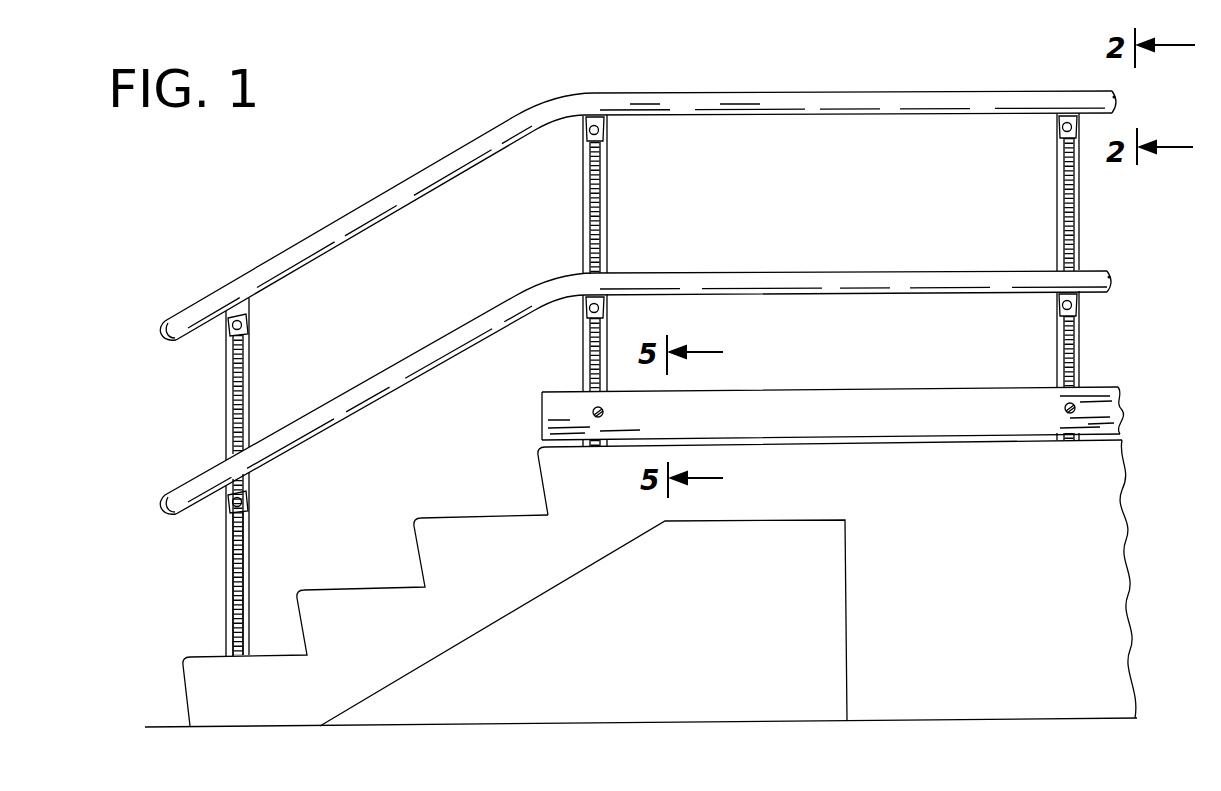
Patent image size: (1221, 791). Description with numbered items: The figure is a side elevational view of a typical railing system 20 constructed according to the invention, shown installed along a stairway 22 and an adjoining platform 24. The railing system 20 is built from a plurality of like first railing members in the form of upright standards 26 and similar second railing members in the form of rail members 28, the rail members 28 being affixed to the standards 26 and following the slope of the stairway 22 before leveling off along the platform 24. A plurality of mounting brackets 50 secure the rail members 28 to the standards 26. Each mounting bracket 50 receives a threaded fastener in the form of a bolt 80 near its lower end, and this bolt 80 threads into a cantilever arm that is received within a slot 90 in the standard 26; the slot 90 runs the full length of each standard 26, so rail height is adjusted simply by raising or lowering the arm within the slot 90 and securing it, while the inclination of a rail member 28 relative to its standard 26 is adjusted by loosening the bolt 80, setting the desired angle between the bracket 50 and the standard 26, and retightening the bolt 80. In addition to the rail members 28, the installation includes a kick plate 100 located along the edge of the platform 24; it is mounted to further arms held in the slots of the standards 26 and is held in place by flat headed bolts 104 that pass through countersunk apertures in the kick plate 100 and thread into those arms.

The railing system 20 is at (627, 88).
The stairway 22 is at (470, 516).
The platform 24 is at (840, 488).
The upright standard 26 is at (251, 385).
The rail member 28 is at (843, 93).
The mounting bracket 50 is at (224, 332).
The bolt 80 is at (250, 325).
The slot 90 is at (238, 596).
The kick plate 100 is at (955, 400).
The flat headed bolt 104 is at (604, 412).